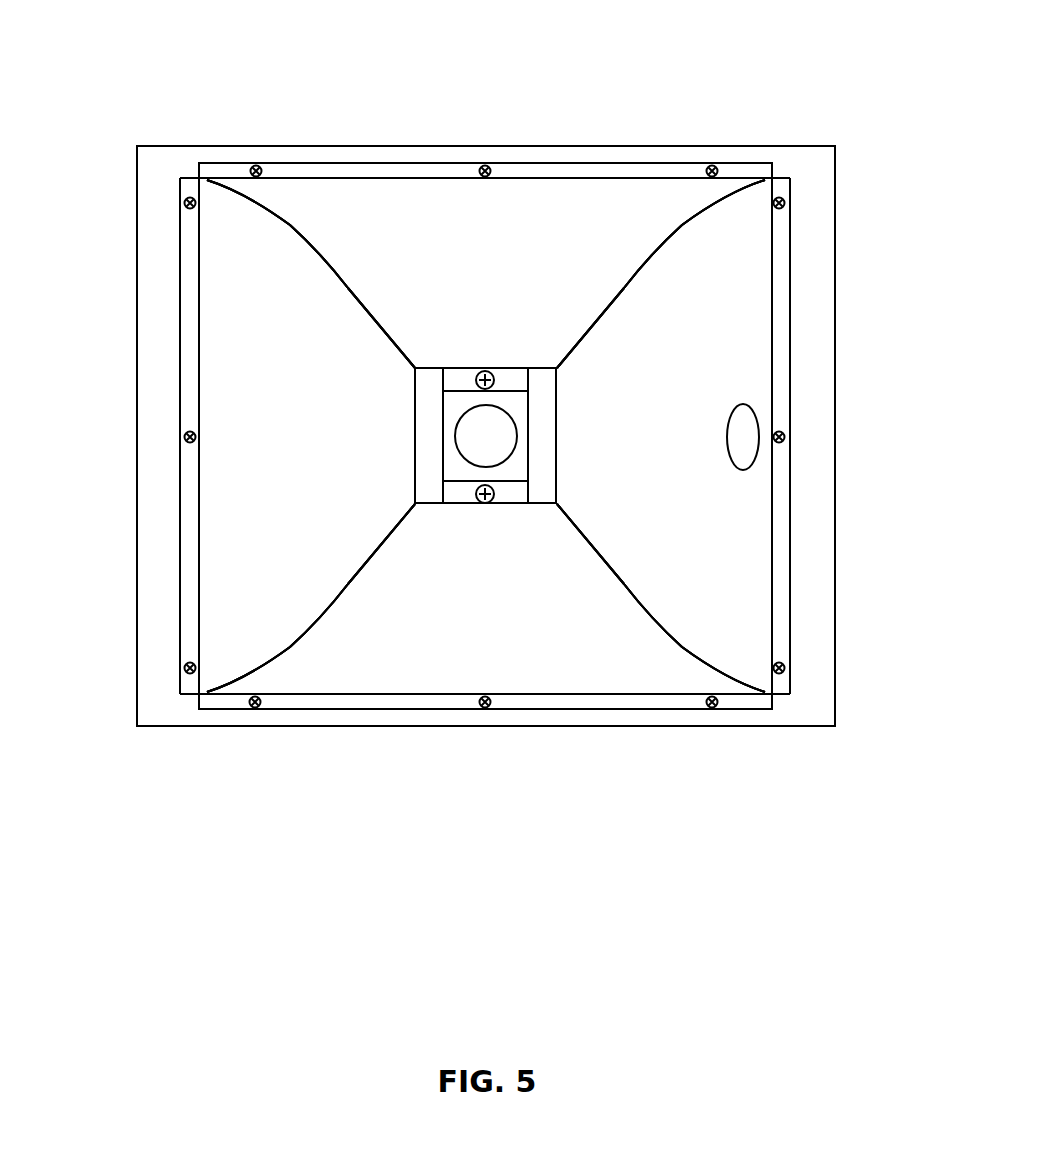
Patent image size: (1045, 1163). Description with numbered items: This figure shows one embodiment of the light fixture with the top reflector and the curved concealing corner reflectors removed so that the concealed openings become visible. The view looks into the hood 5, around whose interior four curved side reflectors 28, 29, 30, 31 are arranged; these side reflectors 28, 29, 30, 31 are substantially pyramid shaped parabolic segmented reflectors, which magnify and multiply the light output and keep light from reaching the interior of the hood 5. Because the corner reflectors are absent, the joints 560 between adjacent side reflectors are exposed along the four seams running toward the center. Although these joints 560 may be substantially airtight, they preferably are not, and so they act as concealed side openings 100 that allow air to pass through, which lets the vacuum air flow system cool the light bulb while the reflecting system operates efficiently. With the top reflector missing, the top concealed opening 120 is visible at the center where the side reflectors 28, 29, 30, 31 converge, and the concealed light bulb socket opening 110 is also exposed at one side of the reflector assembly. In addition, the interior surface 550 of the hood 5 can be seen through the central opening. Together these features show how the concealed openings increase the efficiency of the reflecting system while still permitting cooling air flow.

The hood 5 is at (795, 146).
The curved side reflector 28 is at (525, 625).
The curved side reflector 29 is at (530, 217).
The curved side reflector 30 is at (240, 392).
The curved side reflector 31 is at (738, 593).
The concealed side opening 100 is at (291, 215).
The concealed light bulb socket opening 110 is at (745, 432).
The top concealed opening 120 is at (470, 444).
The interior surface 550 is at (493, 444).
The joint 560 is at (725, 193).